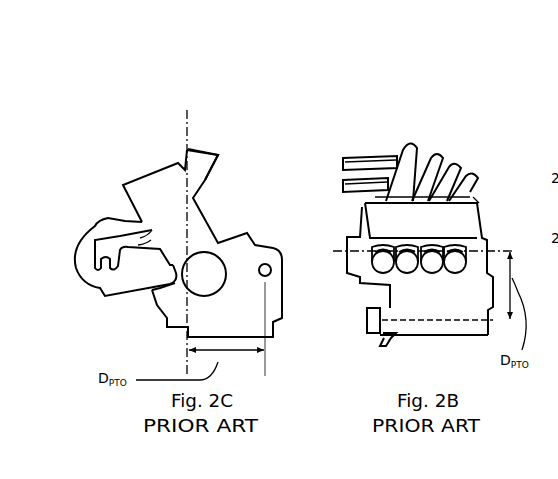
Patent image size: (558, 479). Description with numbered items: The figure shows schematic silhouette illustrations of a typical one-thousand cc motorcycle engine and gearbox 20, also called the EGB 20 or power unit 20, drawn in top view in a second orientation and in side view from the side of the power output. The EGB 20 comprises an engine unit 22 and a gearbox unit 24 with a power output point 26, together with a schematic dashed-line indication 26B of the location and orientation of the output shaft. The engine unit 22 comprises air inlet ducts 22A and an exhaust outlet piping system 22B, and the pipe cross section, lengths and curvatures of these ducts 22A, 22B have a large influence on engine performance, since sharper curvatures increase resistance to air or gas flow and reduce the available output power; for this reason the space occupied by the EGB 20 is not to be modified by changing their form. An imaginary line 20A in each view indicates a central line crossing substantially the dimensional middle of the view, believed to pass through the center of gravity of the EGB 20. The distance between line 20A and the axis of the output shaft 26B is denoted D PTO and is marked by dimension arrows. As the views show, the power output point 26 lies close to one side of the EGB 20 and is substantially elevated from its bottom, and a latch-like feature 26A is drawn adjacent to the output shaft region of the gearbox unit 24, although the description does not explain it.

In FIG. 2C, the engine and gearbox (EGB) power unit 20 is at (164, 80).
In FIG. 2B, the engine and gearbox (EGB) power unit 20 is at (420, 74).
In FIG. 2C, the imaginary central line 20A is at (187, 115).
In FIG. 2B, the imaginary central line 20A is at (506, 246).
In FIG. 2C, the engine unit 22 is at (207, 207).
In FIG. 2B, the engine unit 22 is at (352, 218).
In FIG. 2C, the air inlet ducts 22A is at (205, 150).
In FIG. 2B, the air inlet ducts 22A is at (448, 274).
In FIG. 2C, the exhaust outlet piping system 22B is at (82, 232).
In FIG. 2B, the exhaust outlet piping system 22B is at (463, 170).
In FIG. 2B, the gearbox unit 24 is at (367, 336).
In FIG. 2C, the power output point 26 is at (272, 270).
In FIG. 2B, the latch member 26A is at (367, 315).
In FIG. 2B, the output shaft 26B is at (413, 330).